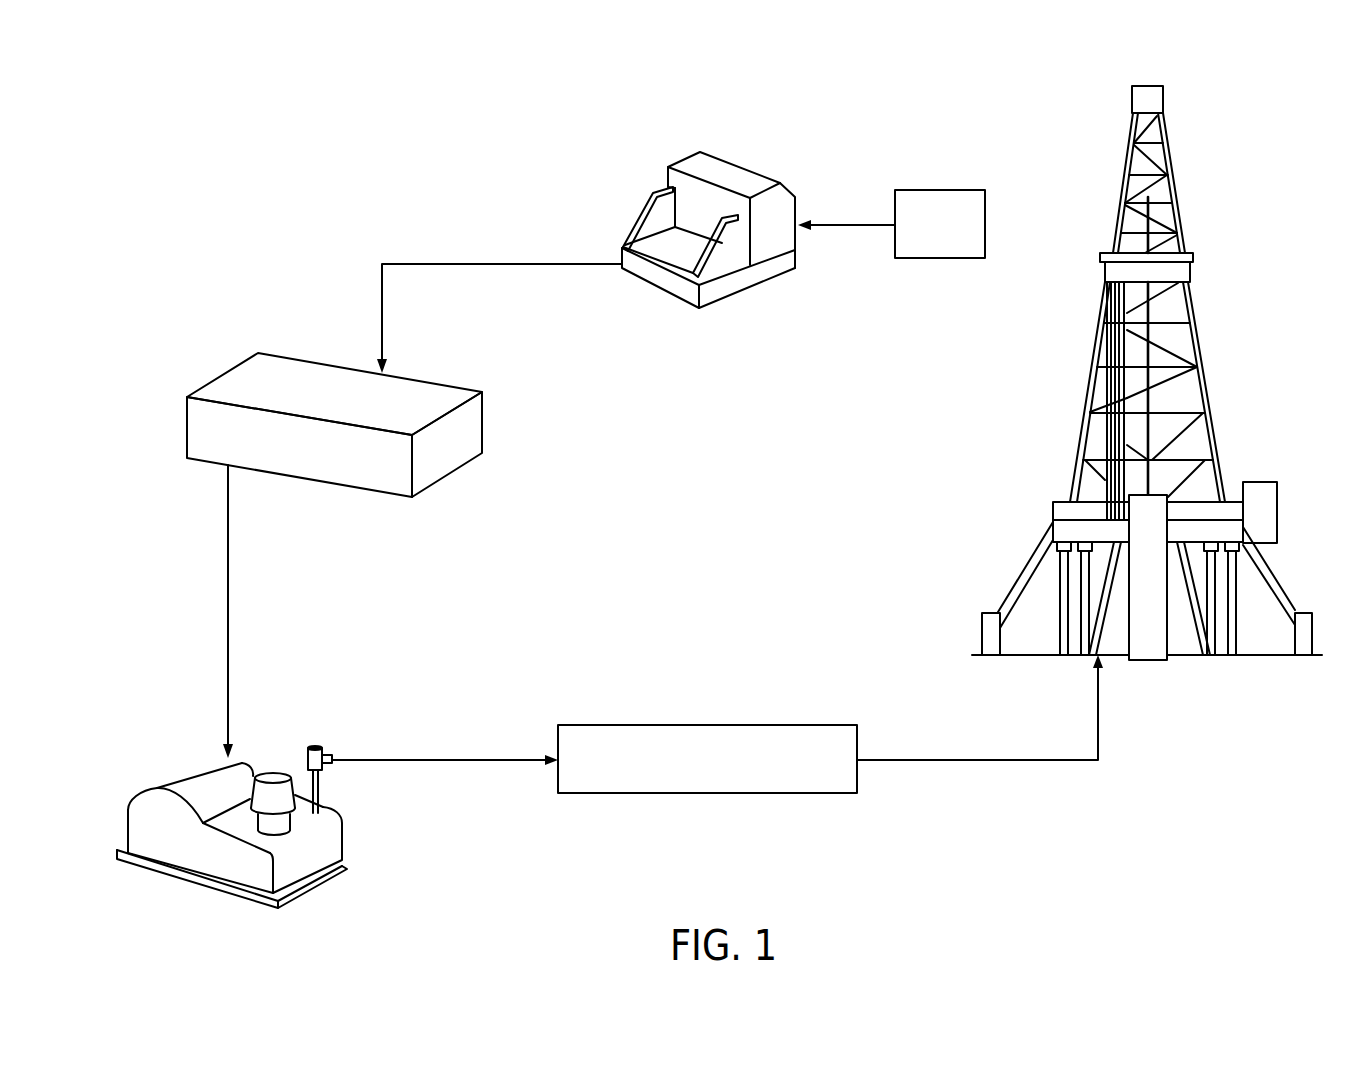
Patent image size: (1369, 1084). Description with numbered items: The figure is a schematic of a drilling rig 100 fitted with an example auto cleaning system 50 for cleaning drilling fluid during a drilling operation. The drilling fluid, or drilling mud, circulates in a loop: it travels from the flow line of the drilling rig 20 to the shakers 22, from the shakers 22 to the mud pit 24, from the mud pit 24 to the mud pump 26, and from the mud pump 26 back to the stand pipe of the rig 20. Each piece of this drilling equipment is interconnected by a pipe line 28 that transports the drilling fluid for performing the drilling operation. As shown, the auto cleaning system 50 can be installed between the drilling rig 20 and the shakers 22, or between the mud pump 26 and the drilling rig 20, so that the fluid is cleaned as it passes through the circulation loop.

The drilling rig 100 is at (398, 100).
The drilling rig 20 is at (1163, 97).
The shakers 22 is at (733, 163).
The mud pit 24 is at (324, 383).
The mud pump 26 is at (243, 763).
The pipe line 28 is at (852, 225).
The auto cleaning system 50 is at (957, 241).